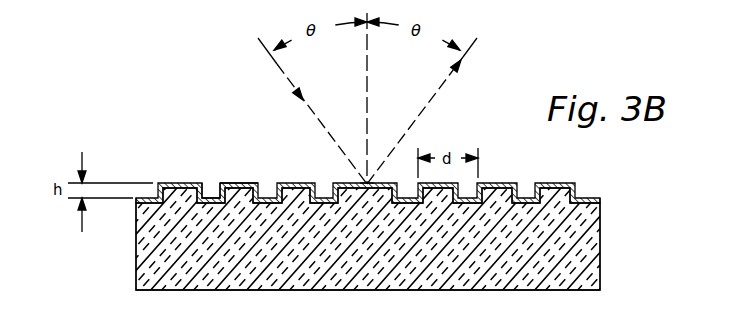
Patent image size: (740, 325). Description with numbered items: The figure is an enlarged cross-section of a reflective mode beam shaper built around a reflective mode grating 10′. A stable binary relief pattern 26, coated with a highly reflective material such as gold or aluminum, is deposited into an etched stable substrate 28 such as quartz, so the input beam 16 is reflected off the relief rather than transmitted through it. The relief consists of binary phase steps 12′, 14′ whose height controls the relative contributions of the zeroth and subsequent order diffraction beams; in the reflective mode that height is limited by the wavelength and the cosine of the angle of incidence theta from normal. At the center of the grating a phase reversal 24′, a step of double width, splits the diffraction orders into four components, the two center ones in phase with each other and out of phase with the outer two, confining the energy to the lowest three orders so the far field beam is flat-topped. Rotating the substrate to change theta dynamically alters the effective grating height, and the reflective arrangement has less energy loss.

The reflective mode grating 10′ is at (120, 257).
The binary phase step 12′ is at (212, 199).
The binary phase step 14′ is at (237, 184).
The incident light beam 16 is at (272, 61).
The phase reversal 24′ is at (367, 189).
The stable binary relief pattern 26 is at (560, 184).
The etched stable substrate 28 is at (598, 236).